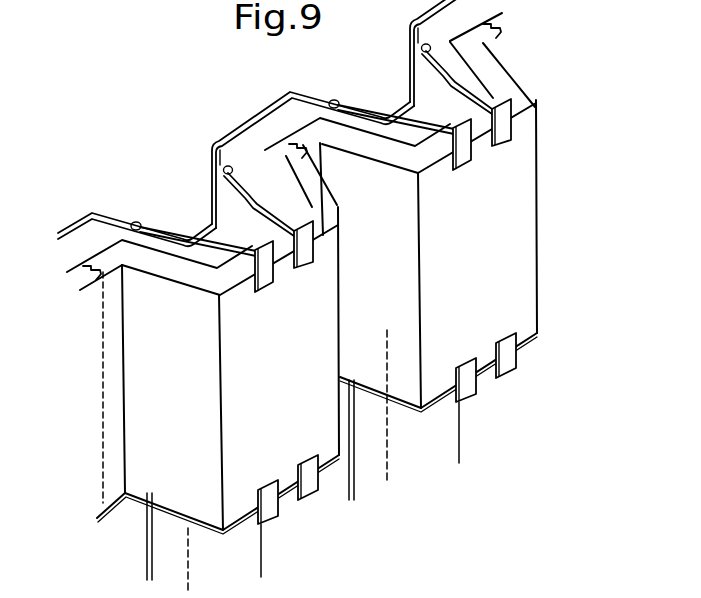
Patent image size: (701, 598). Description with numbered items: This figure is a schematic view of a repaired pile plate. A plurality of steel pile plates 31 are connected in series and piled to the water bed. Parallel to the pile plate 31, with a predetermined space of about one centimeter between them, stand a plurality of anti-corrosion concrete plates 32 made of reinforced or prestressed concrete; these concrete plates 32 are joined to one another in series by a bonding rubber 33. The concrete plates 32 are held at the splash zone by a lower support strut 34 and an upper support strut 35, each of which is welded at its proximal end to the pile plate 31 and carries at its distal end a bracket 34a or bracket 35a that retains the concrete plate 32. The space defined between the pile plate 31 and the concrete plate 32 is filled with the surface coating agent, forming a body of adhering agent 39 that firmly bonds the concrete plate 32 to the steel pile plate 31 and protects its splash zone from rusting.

The steel pile plate 31 is at (155, 222).
The anti-corrosion concrete plate 32 is at (203, 275).
The bonding rubber 33 is at (84, 269).
The lower support strut 34 is at (491, 378).
The bracket 34a is at (512, 357).
The upper support strut 35 is at (318, 228).
The bracket 35a is at (308, 253).
The body of adhering agent 39 is at (258, 140).